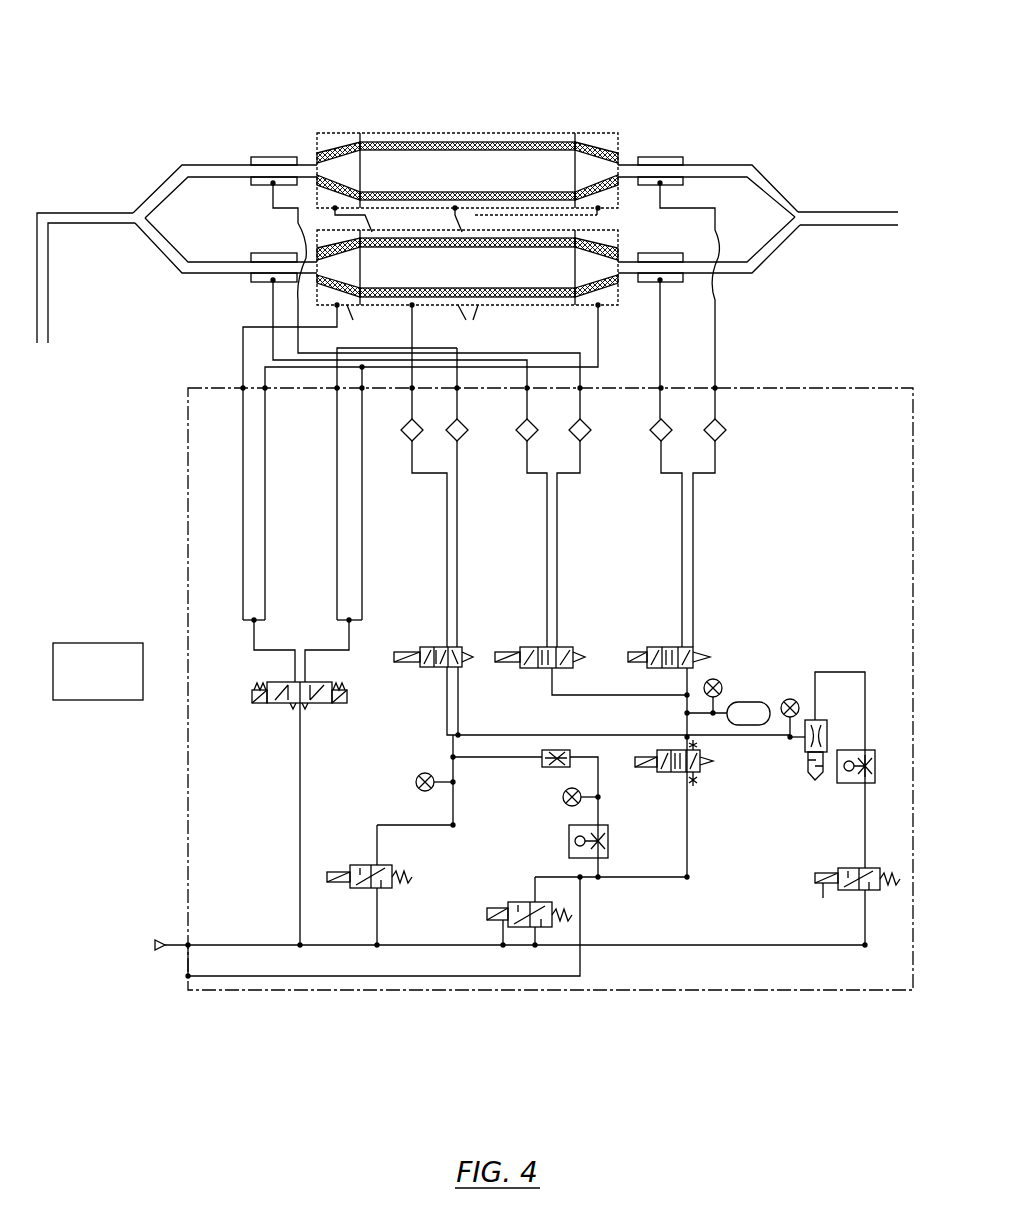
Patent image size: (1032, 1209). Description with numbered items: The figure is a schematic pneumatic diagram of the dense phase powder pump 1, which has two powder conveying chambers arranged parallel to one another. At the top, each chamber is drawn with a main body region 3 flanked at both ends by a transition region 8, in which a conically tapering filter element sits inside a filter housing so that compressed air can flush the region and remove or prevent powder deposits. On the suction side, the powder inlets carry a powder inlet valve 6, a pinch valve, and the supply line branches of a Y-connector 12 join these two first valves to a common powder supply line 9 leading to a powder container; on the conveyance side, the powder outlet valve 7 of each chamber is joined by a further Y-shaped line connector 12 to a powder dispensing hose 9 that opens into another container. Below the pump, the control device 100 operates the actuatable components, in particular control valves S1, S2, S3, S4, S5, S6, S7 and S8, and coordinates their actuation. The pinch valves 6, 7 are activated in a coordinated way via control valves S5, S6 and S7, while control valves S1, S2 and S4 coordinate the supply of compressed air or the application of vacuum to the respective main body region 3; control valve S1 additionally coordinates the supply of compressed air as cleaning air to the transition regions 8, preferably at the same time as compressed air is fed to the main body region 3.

The dense phase powder pump 1 is at (496, 27).
The main body region 3 is at (435, 237).
The powder inlet valve 6 is at (268, 255).
The powder outlet valve 7 is at (678, 155).
The transition region 8 is at (337, 240).
The powder supply line 9 is at (80, 222).
The Y-connector 12 is at (137, 213).
The control device 100 is at (98, 671).
The control valve S1 is at (299, 813).
The control valve S2 is at (369, 885).
The control valve S3 is at (518, 911).
The control valve S4 is at (583, 762).
The control valve S5 is at (591, 675).
The control valve S6 is at (699, 763).
The control valve S7 is at (693, 763).
The control valve S8 is at (840, 906).